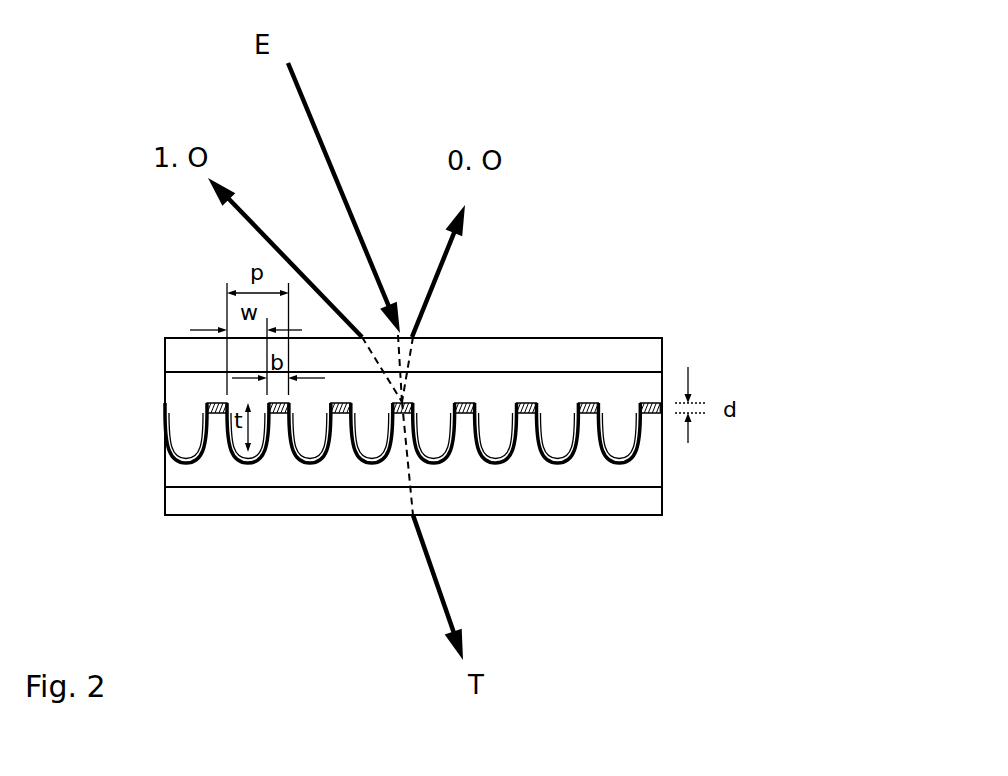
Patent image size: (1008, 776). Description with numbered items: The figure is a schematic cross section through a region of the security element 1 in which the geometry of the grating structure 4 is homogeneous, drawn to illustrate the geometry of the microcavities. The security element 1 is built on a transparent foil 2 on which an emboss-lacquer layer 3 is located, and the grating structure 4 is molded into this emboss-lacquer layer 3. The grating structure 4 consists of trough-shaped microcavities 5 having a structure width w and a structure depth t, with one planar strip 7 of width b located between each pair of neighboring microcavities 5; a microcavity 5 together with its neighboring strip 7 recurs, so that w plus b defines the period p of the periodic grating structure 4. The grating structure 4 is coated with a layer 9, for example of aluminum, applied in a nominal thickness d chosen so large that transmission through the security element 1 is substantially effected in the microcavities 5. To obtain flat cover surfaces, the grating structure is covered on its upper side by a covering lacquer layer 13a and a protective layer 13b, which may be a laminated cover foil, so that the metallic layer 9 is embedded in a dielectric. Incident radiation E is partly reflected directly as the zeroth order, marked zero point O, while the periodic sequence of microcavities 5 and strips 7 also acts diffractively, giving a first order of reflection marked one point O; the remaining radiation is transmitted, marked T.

The security element 1 is at (563, 165).
The transparent foil 2 is at (563, 502).
The emboss-lacquer layer 3 is at (652, 443).
The grating structure 4 is at (432, 390).
The microcavities 5 is at (490, 433).
The strips 7 is at (518, 403).
The layer 9 is at (648, 402).
The covering lacquer layer 13a is at (168, 403).
The protective layer 13b is at (188, 356).